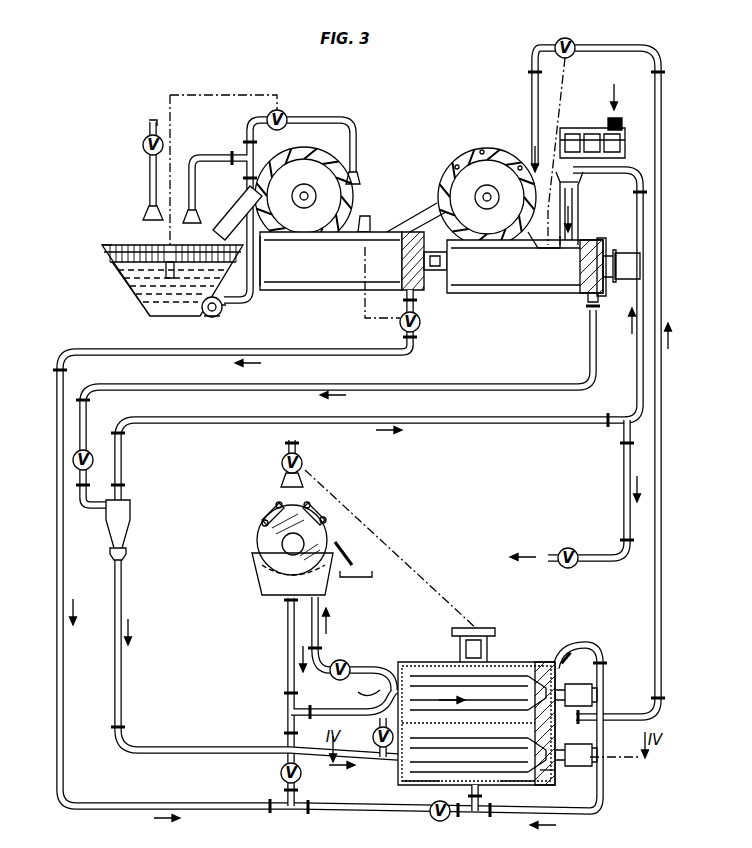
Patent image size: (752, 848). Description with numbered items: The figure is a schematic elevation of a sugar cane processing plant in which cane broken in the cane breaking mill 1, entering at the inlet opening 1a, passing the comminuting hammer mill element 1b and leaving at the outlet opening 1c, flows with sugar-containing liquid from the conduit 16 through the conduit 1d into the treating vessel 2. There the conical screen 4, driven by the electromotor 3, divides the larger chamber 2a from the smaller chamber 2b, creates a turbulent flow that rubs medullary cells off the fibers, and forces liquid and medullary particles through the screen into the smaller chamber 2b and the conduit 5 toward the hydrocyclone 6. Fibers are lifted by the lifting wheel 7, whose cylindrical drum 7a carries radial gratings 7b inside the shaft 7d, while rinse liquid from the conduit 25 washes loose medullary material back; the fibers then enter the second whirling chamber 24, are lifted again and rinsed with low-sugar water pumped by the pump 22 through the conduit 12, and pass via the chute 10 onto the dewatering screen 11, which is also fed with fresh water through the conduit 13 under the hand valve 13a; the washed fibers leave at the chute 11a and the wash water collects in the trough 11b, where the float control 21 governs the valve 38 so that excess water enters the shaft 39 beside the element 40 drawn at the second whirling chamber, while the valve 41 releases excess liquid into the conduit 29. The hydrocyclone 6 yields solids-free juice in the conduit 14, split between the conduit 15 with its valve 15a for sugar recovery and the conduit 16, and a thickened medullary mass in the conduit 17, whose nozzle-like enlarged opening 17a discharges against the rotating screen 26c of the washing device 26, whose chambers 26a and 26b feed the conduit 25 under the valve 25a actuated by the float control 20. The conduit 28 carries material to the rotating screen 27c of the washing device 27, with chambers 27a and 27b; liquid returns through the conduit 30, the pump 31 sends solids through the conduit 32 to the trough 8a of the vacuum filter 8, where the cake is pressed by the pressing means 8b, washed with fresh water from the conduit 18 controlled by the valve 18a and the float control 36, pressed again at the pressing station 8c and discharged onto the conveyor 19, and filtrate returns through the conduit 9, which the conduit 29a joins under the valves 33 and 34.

The cane breaking mill 1 is at (575, 130).
The inlet opening 1a is at (618, 118).
The comminuting hammer mill element 1b is at (590, 128).
The outlet opening 1c is at (582, 176).
The conduit 1d is at (580, 207).
The treating vessel 2 is at (522, 296).
The larger chamber 2a is at (462, 295).
The smaller chamber 2b is at (605, 243).
The electromotor 3 is at (622, 280).
The conical screen 4 is at (592, 268).
The conduit 5 is at (468, 385).
The hydrocyclone 6 is at (128, 530).
The lifting wheel 7 is at (318, 160).
The cylindrical drum 7a is at (452, 162).
The gratings 7b is at (480, 150).
The shaft 7d is at (518, 165).
The vacuum filter 8 is at (258, 538).
The trough 8a is at (255, 576).
The pressing means 8b is at (270, 507).
The pressing station 8c is at (328, 515).
The conduit 9 is at (286, 618).
The chute 10 is at (420, 200).
The dewatering screen 11 is at (125, 246).
The chute 11a is at (100, 247).
The trough 11b is at (128, 282).
The conduit 12 is at (326, 118).
The conduit 13 is at (150, 172).
The hand valve 13a is at (146, 144).
The conduit 14 is at (222, 421).
The conduit 15 is at (622, 466).
The valve 15a is at (576, 548).
The conduit 16 is at (638, 372).
The conduit 17 is at (123, 662).
The nozzle-like enlarged opening 17a is at (520, 740).
The conduit 18 is at (287, 441).
The valve 18a is at (305, 461).
The conveyor 19 is at (370, 576).
The float control 20 is at (542, 250).
The float control 21 is at (165, 280).
The pump 22 is at (218, 314).
The second whirling chamber 24 is at (326, 292).
The conduit 25 is at (655, 578).
The valve 25a is at (577, 42).
The washing device 26 is at (398, 781).
The chamber 26a is at (425, 785).
The chamber 26b is at (555, 775).
The rotating screen 26c is at (530, 785).
The washing device 27 is at (398, 665).
The chamber 27a is at (424, 662).
The chamber 27b is at (548, 648).
The rotating screen 27c is at (525, 662).
The conduit 28 is at (478, 692).
The conduit 29 is at (310, 350).
The conduit 29a is at (284, 737).
The conduit 30 is at (606, 779).
The pump 31 is at (350, 684).
The conduit 32 is at (322, 640).
The valve 33 is at (281, 773).
The valve 34 is at (431, 818).
The float control 36 is at (482, 628).
The valve 38 is at (283, 111).
The shaft 39 is at (360, 172).
The nozzle 40 is at (367, 216).
The valve 41 is at (421, 322).